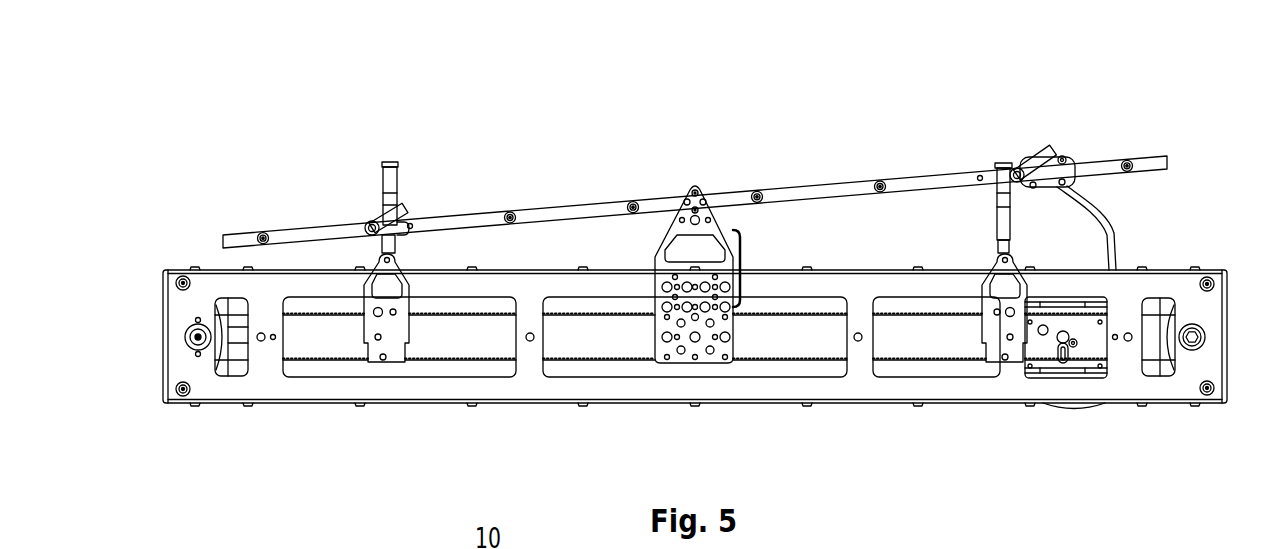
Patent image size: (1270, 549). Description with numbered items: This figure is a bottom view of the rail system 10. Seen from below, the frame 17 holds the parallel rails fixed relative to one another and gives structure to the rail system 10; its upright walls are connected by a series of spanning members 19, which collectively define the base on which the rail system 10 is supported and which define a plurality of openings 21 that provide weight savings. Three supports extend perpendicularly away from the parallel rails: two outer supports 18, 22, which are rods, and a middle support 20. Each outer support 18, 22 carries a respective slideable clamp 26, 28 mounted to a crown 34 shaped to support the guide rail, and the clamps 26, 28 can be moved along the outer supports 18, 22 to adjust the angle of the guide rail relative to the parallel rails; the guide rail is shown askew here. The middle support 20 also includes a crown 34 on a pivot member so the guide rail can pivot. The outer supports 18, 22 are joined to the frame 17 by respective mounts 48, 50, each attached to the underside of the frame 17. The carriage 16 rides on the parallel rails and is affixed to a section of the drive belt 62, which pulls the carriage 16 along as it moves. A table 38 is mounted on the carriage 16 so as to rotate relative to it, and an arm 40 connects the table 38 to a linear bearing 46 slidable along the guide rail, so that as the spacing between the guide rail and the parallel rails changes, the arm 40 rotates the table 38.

The rail system 10 is at (513, 136).
The carriage 16 is at (1090, 350).
The frame 17 is at (720, 377).
The outer support 18 is at (380, 180).
The spanning members 19 is at (845, 350).
The middle support 20 is at (725, 270).
The openings 21 is at (610, 343).
The outer support 22 is at (993, 203).
The slideable clamp 26 is at (409, 231).
The slideable clamp 28 is at (1000, 163).
The crown 34 is at (813, 187).
The table 38 is at (1075, 407).
The arm 40 is at (1120, 212).
The linear bearing 46 is at (1070, 157).
The mount 48 is at (393, 330).
The mount 50 is at (990, 327).
The drive belt 62 is at (488, 317).